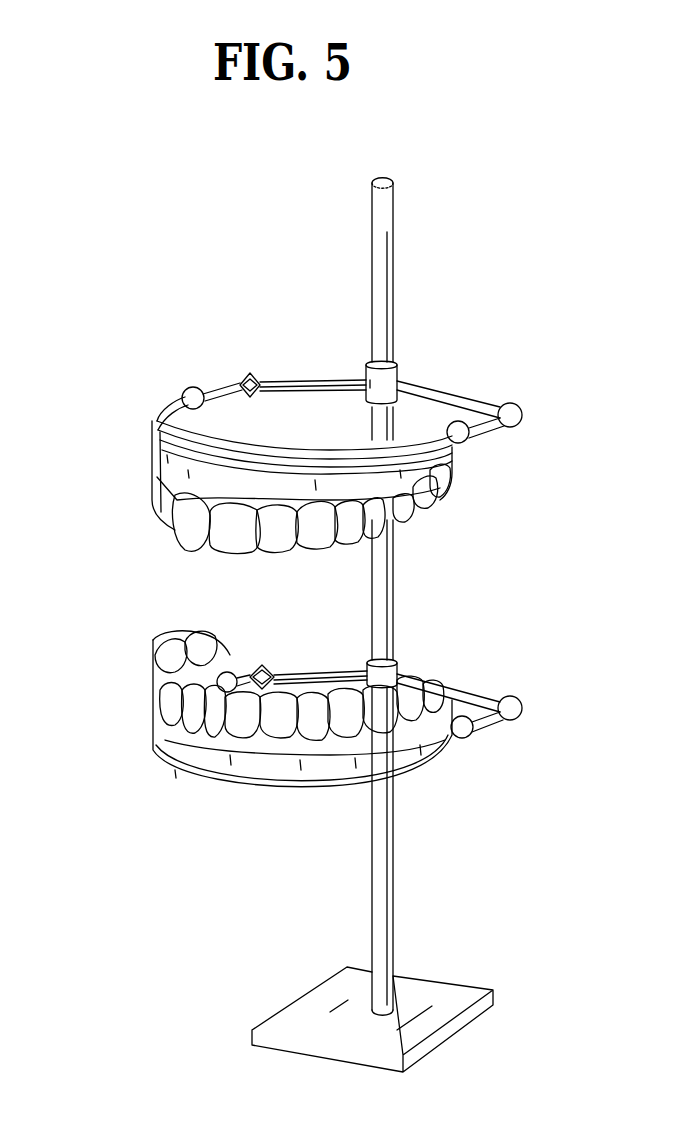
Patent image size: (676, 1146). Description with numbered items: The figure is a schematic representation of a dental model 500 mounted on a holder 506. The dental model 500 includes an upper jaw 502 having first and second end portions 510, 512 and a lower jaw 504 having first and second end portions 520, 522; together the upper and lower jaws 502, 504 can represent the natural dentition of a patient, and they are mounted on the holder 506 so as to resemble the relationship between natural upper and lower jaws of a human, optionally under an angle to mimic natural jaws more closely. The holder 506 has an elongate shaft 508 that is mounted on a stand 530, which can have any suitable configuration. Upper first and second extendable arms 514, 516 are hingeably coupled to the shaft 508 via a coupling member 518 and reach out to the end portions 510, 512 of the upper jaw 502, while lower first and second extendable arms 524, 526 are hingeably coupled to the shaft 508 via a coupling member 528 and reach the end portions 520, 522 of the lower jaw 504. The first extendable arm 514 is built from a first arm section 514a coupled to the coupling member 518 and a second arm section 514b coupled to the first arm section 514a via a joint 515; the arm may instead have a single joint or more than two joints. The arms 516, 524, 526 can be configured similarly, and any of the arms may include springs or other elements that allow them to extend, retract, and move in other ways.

The dental model 500 is at (79, 428).
The upper jaw 502 is at (214, 540).
The lower jaw 504 is at (230, 780).
The holder 506 is at (459, 291).
The elongate shaft 508 is at (394, 257).
The first end portion of the upper jaw 510 is at (182, 400).
The second end portion of the upper jaw 512 is at (448, 463).
The first extendable arm 514 is at (291, 337).
The first arm section 514a is at (332, 379).
The second arm section 514b is at (215, 383).
The joint 515 is at (250, 372).
The second extendable arm 516 is at (466, 402).
The coupling member 518 is at (398, 370).
The first end portion of the lower jaw 520 is at (226, 670).
The second end portion of the lower jaw 522 is at (426, 752).
The first extendable arm 524 is at (321, 672).
The second extendable arm 526 is at (504, 697).
The coupling member 528 is at (400, 672).
The stand 530 is at (478, 986).